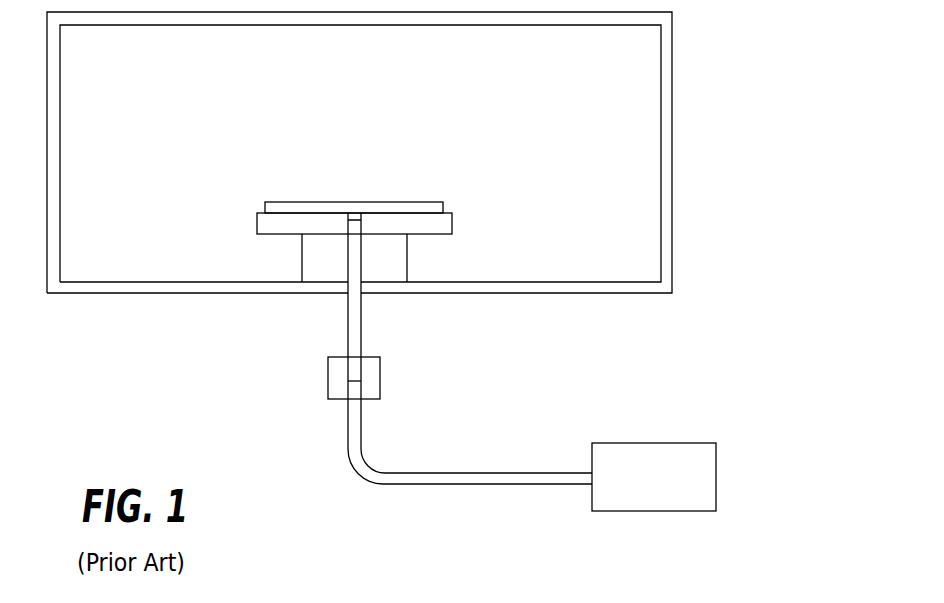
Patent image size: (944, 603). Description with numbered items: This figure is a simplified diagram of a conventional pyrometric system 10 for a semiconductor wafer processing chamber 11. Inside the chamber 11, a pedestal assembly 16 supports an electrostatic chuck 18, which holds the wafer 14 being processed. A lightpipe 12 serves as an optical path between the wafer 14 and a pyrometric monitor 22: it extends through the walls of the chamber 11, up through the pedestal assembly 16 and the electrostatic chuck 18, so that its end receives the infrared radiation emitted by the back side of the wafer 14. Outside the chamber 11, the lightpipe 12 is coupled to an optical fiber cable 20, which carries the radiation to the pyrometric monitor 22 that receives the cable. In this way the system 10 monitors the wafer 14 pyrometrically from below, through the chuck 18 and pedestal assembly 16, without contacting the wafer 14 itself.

The pyrometric system 10 is at (735, 336).
The semiconductor wafer processing chamber 11 is at (672, 75).
The lightpipe 12 is at (349, 330).
The wafer 14 is at (418, 202).
The pedestal assembly 16 is at (407, 259).
The electrostatic chuck 18 is at (257, 224).
The optical fiber cable 20 is at (402, 473).
The pyrometric monitor 22 is at (716, 492).